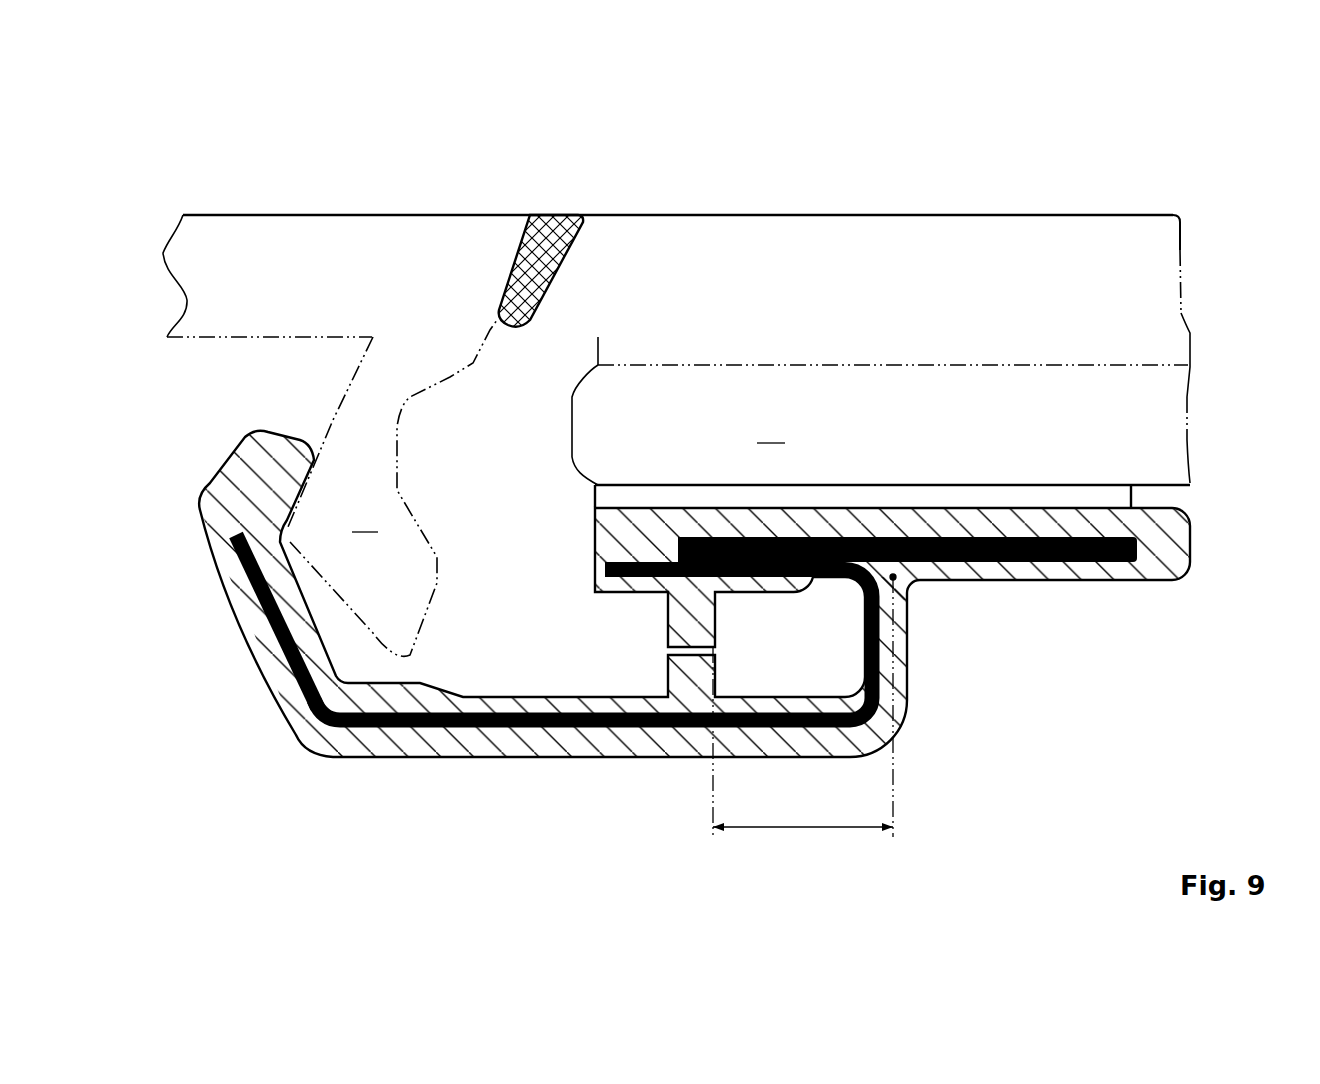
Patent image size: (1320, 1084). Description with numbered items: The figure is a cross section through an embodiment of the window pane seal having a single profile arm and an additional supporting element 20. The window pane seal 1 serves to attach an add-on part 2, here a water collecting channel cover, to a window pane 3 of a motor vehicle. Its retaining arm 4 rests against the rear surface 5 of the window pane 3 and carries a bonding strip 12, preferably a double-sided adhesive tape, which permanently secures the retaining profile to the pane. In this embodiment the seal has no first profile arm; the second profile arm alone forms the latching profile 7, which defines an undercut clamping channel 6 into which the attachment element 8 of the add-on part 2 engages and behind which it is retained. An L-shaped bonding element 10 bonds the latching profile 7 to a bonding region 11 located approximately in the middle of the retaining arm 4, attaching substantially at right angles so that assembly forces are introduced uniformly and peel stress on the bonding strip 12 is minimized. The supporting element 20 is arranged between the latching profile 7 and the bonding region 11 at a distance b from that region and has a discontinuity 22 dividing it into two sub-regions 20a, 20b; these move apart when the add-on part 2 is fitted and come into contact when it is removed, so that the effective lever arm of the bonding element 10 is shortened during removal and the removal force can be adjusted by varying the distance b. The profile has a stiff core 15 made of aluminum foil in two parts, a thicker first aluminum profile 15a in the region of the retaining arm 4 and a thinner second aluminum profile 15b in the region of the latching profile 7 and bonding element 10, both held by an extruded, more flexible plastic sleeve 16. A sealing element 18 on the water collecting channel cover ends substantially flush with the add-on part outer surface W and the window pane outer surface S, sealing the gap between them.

The retaining profile 1 is at (258, 808).
The add-on part 2 is at (258, 277).
The window pane 3 is at (881, 411).
The retaining arm 4 is at (1030, 617).
The surface 5 is at (1177, 492).
The undercut clamping channel 6 is at (350, 648).
The latching profile 7 is at (207, 617).
The attachment element 8 is at (392, 488).
The bonding element 10 is at (603, 780).
The bonding region 11 is at (893, 577).
The bonding strip 12 is at (1007, 495).
The core 15 is at (704, 432).
The first aluminum profile 15a is at (1140, 550).
The second aluminum profile 15b is at (233, 533).
The plastic sleeve 16 is at (265, 457).
The sealing element 18 is at (550, 233).
The supporting element 20 is at (853, 747).
The sub-region of the supporting element 20a is at (688, 631).
The sub-region of the supporting element 20b is at (692, 677).
The discontinuity 22 is at (793, 535).
The add-on part outer surface W is at (397, 212).
The window pane outer surface S is at (1087, 212).
The distance b is at (803, 707).